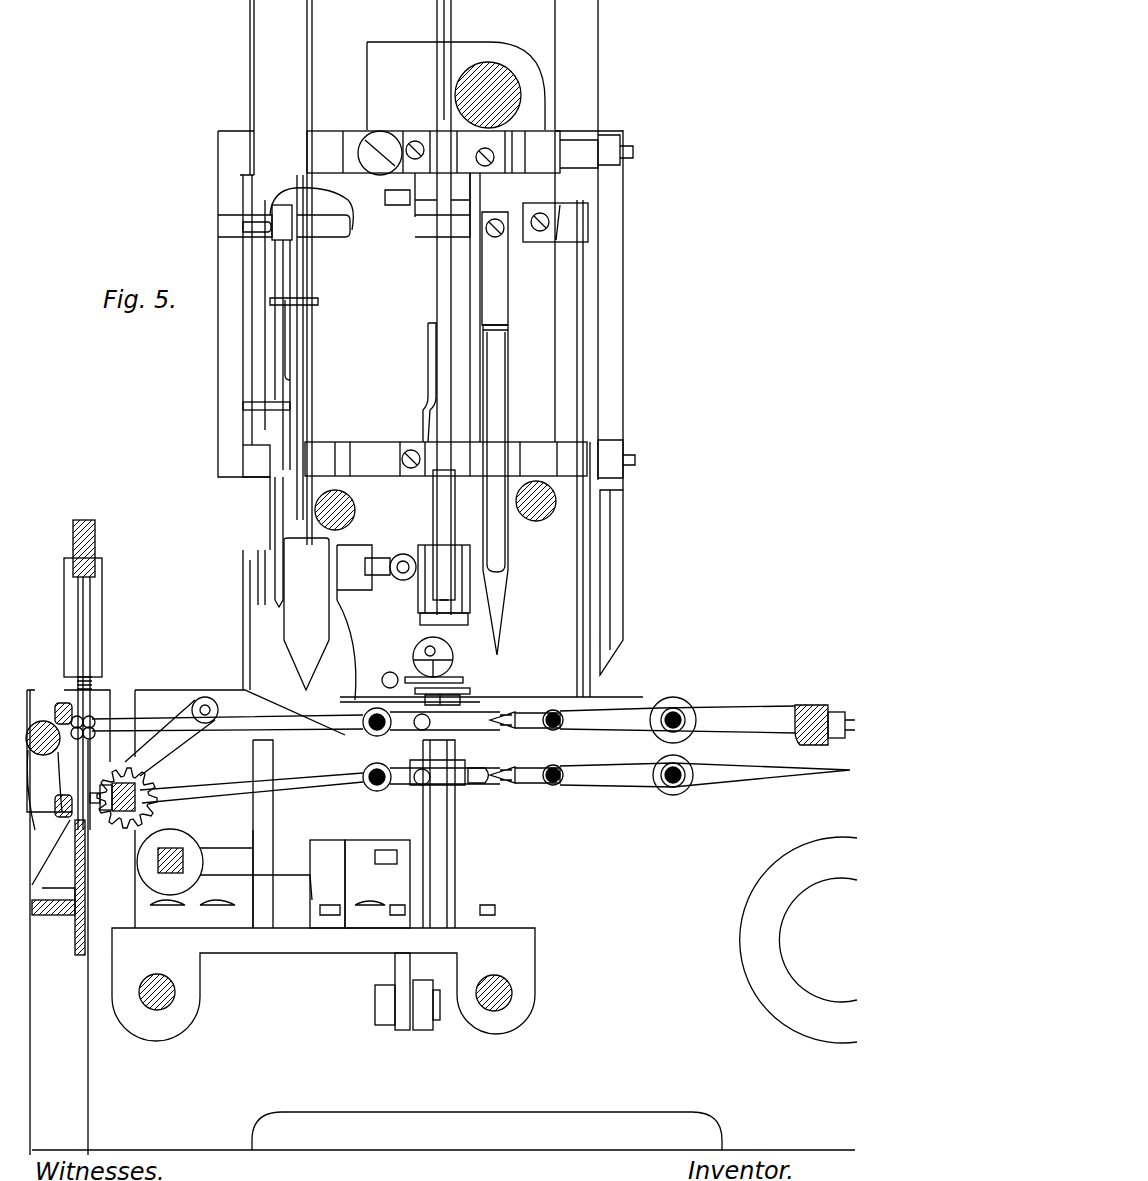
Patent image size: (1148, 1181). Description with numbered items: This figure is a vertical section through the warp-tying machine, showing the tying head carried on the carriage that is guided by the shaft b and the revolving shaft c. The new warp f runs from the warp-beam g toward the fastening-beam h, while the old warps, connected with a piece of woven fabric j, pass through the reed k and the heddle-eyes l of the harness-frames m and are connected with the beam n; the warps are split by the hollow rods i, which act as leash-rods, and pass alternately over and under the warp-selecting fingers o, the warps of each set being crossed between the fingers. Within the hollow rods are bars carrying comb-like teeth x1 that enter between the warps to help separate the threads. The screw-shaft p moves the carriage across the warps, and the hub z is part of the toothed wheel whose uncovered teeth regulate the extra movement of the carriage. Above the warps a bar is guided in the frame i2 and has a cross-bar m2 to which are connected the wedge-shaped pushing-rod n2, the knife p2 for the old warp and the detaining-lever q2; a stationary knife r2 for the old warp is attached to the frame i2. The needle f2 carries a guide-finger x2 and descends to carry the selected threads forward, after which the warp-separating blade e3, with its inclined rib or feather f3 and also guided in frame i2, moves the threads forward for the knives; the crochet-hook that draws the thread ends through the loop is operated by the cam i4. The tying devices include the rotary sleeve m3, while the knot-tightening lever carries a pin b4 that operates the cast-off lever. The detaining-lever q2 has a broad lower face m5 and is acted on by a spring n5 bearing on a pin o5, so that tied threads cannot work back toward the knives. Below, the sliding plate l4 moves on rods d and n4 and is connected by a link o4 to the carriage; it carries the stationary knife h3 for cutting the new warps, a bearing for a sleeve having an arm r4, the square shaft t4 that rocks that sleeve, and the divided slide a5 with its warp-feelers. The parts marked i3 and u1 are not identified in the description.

The warp-separating blade e3 is at (436, 272).
The needle f2 is at (443, 22).
The shaft b is at (478, 70).
The cam i4 is at (470, 165).
The cross-bar m2 is at (344, 205).
The guide-finger x2 is at (426, 418).
The wedge-shaped pushing-rod n2 is at (495, 490).
The spring n5 is at (260, 280).
The detaining-lever q2 is at (296, 268).
The pin o5 is at (243, 404).
The frame i2 is at (470, 459).
The screw-shaft p is at (350, 510).
The shaft c is at (556, 500).
The broad lower face m5 is at (306, 614).
The inclined rib or feather f3 is at (255, 608).
The rod i3 is at (275, 525).
The stationary knife r2 is at (420, 620).
The rotary sleeve m3 is at (396, 640).
The pin b4 is at (463, 676).
The knife for the old warp p2 is at (592, 569).
The hollow rods i is at (710, 777).
The heddle-eyes l is at (565, 722).
The warp-selecting fingers o is at (484, 747).
The pivot stud u1 is at (680, 766).
The beam n is at (707, 715).
The new warp f is at (705, 776).
The comb-like teeth x1 is at (370, 790).
The stationary knife h3 is at (251, 782).
The harness-frames m is at (75, 837).
The piece of woven fabric j is at (49, 760).
The reed k is at (57, 708).
The hub z is at (87, 721).
The fastening-beam h is at (138, 790).
The divided slide a5 is at (427, 834).
The arm r4 is at (223, 878).
The shaft t4 is at (158, 873).
The sliding plate l4 is at (323, 984).
The rod n4 is at (140, 985).
The rod d is at (515, 990).
The link o4 is at (407, 991).
The warp-beam g is at (798, 940).